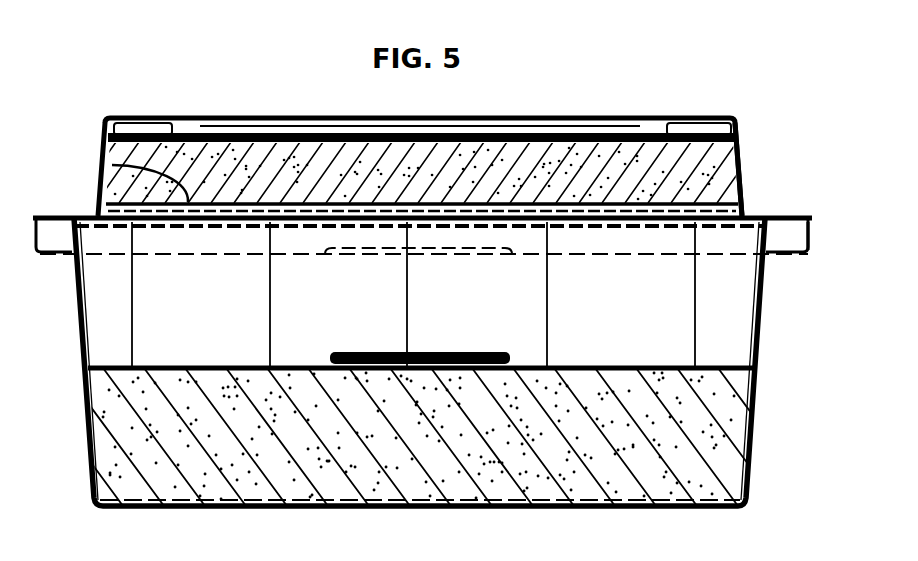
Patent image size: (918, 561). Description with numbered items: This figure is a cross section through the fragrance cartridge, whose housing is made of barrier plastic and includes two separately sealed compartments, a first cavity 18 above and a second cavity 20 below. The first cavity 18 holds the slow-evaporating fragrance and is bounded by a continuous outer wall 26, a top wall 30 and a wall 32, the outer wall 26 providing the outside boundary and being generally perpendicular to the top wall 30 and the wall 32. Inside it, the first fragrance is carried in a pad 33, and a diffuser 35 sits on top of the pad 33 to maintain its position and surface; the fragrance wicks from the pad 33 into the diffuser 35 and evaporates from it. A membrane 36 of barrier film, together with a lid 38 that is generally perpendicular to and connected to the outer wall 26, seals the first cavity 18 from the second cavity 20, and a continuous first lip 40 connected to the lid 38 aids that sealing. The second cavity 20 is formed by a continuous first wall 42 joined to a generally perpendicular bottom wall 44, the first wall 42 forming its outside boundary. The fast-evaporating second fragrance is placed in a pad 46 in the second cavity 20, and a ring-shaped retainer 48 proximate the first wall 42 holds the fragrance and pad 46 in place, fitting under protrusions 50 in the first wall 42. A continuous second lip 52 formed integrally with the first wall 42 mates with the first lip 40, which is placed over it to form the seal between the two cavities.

The first cavity 18 is at (525, 148).
The second cavity 20 is at (621, 327).
The continuous outer wall 26 is at (100, 195).
The top wall 30 is at (150, 116).
The wall 32 is at (198, 132).
The pad 33 is at (738, 160).
The diffuser 35 is at (115, 128).
The membrane 36 is at (110, 166).
The lid 38 is at (48, 214).
The first lip 40 is at (811, 237).
The first wall 42 is at (90, 471).
The bottom wall 44 is at (660, 508).
The pad 46 is at (372, 493).
The retainer 48 is at (175, 363).
The protrusions 50 is at (82, 358).
The second lip 52 is at (783, 257).